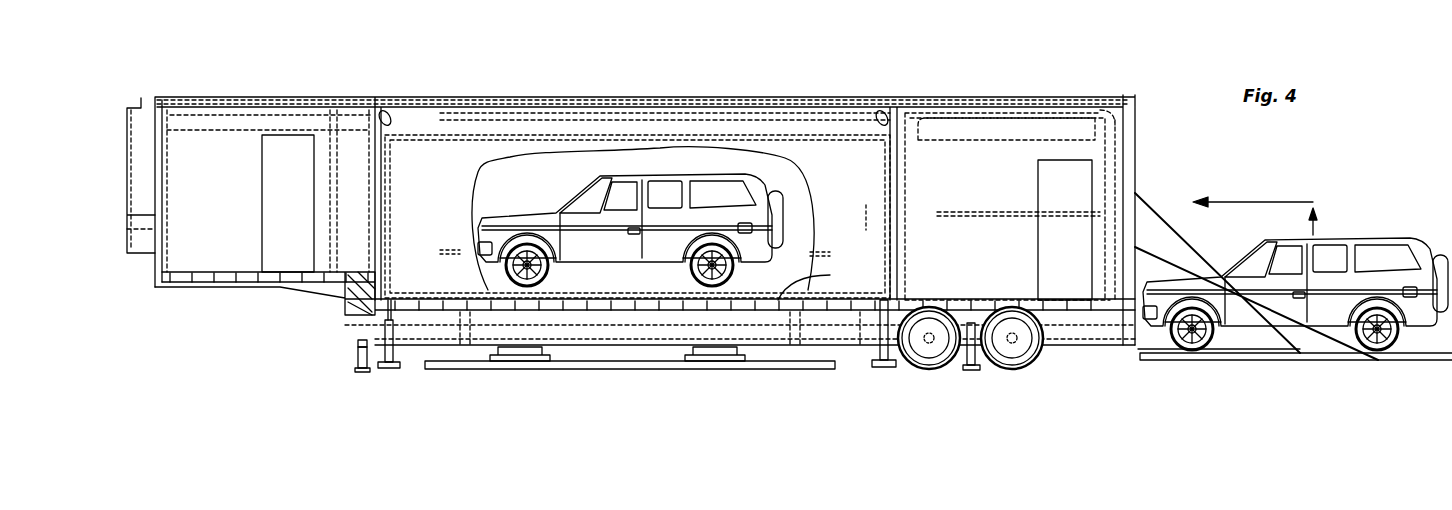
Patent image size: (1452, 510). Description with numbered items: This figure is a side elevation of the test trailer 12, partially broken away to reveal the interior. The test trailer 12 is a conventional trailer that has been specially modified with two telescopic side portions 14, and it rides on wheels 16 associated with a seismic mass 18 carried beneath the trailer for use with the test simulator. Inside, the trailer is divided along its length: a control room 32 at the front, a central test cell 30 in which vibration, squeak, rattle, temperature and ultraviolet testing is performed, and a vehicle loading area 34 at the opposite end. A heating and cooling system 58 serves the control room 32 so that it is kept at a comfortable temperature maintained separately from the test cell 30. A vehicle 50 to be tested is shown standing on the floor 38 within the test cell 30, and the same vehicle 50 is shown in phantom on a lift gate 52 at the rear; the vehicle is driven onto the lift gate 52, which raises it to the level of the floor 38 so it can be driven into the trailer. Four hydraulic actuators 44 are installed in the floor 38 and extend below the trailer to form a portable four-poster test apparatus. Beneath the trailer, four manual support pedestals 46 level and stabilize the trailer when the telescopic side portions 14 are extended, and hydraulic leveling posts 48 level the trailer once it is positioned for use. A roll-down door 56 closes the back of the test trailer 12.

The test trailer 12 is at (234, 96).
The telescopic side portions 14 is at (833, 152).
The wheels 16 is at (1025, 365).
The seismic mass 18 is at (636, 370).
The test cell 30 is at (552, 168).
The control room 32 is at (218, 250).
The vehicle loading area 34 is at (982, 152).
The floor 38 is at (819, 279).
The hydraulic actuators 44 is at (510, 356).
The manual support pedestals 46 is at (388, 370).
The hydraulic leveling posts 48 is at (355, 358).
The vehicle 50 is at (544, 212).
The lift gate 52 is at (1293, 363).
The roll-down door 56 is at (1138, 157).
The heating and cooling system 58 is at (137, 118).